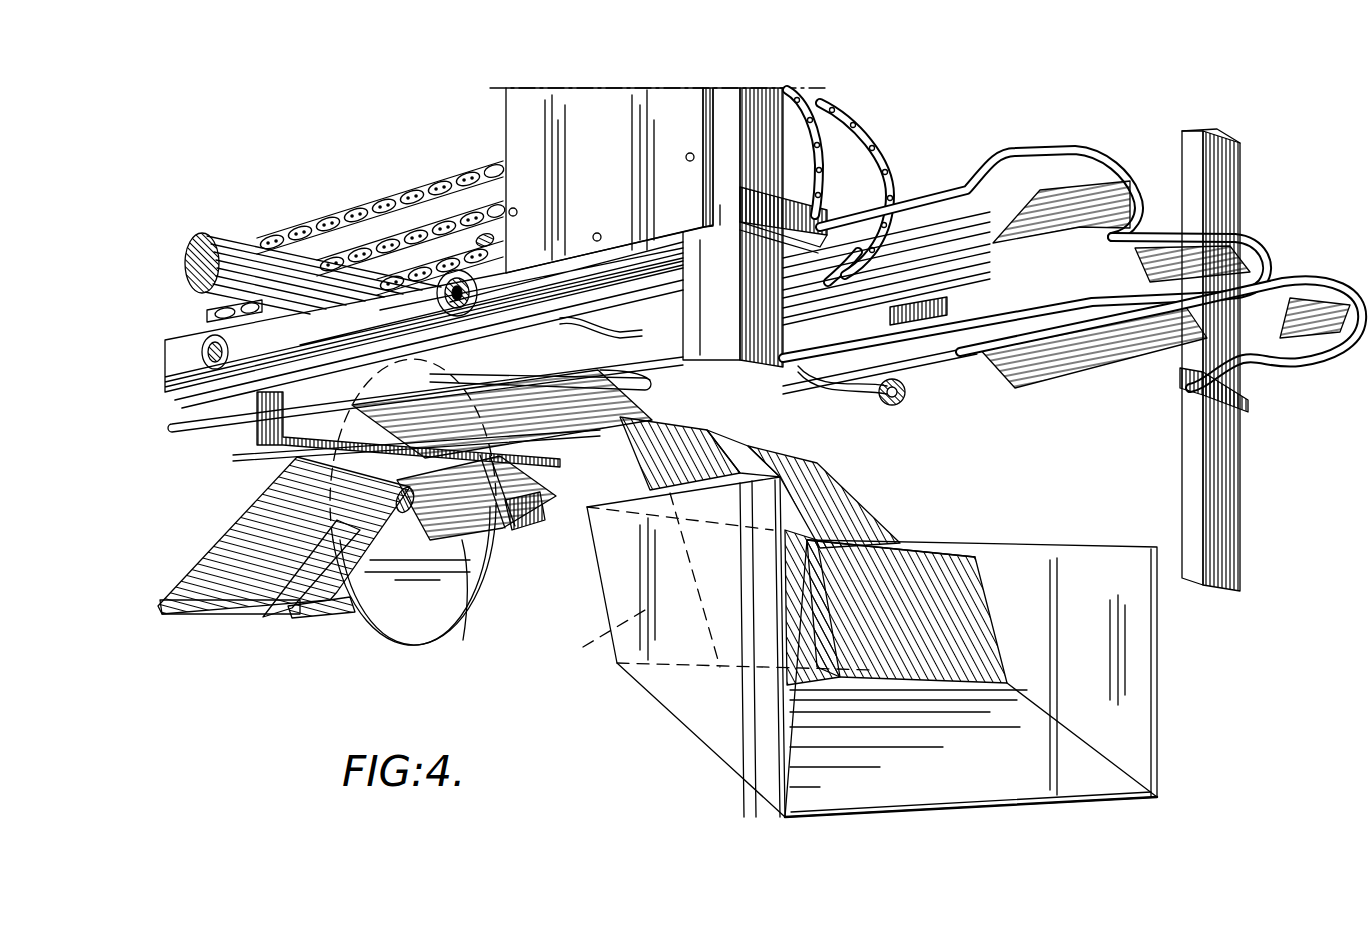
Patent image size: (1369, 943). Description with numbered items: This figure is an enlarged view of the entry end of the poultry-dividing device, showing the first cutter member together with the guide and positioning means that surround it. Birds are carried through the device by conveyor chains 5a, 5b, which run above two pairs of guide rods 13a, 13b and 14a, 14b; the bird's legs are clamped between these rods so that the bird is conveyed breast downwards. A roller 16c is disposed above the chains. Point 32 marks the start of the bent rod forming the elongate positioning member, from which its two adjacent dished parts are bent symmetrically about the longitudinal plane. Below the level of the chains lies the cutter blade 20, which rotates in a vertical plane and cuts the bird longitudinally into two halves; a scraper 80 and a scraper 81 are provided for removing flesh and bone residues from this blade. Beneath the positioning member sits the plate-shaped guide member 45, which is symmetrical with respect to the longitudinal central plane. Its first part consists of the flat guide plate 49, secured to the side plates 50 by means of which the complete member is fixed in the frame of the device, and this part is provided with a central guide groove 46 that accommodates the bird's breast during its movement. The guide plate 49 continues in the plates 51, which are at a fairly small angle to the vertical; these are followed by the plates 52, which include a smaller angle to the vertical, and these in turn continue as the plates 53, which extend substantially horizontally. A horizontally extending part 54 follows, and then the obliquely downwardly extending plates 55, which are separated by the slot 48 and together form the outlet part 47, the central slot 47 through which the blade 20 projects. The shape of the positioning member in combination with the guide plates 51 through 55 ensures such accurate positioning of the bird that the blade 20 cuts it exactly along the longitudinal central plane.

The conveyor chain 5a is at (800, 97).
The conveyor chain 5b is at (863, 130).
The roller 16c is at (257, 260).
The horizontally extending part 54 is at (527, 417).
The point 32 is at (656, 395).
The plates 53 is at (573, 412).
The scraper 81 is at (510, 528).
The cutter blade 20 is at (397, 613).
The scraper 80 is at (477, 597).
The central slot (outlet part) 47 is at (221, 506).
The obliquely downwardly extending plates 55 is at (223, 583).
The slot 48 is at (267, 617).
The plates 52 is at (680, 440).
The central guide groove 46 is at (737, 453).
The plates 51 is at (996, 507).
The side plates 50 is at (700, 705).
The flat guide plate 49 is at (1050, 795).
The guide member 45 is at (877, 513).
The guide rod 13a is at (1050, 255).
The guide rod 13b is at (1140, 262).
The guide rod 14a is at (1217, 263).
The guide rod 14b is at (1075, 318).